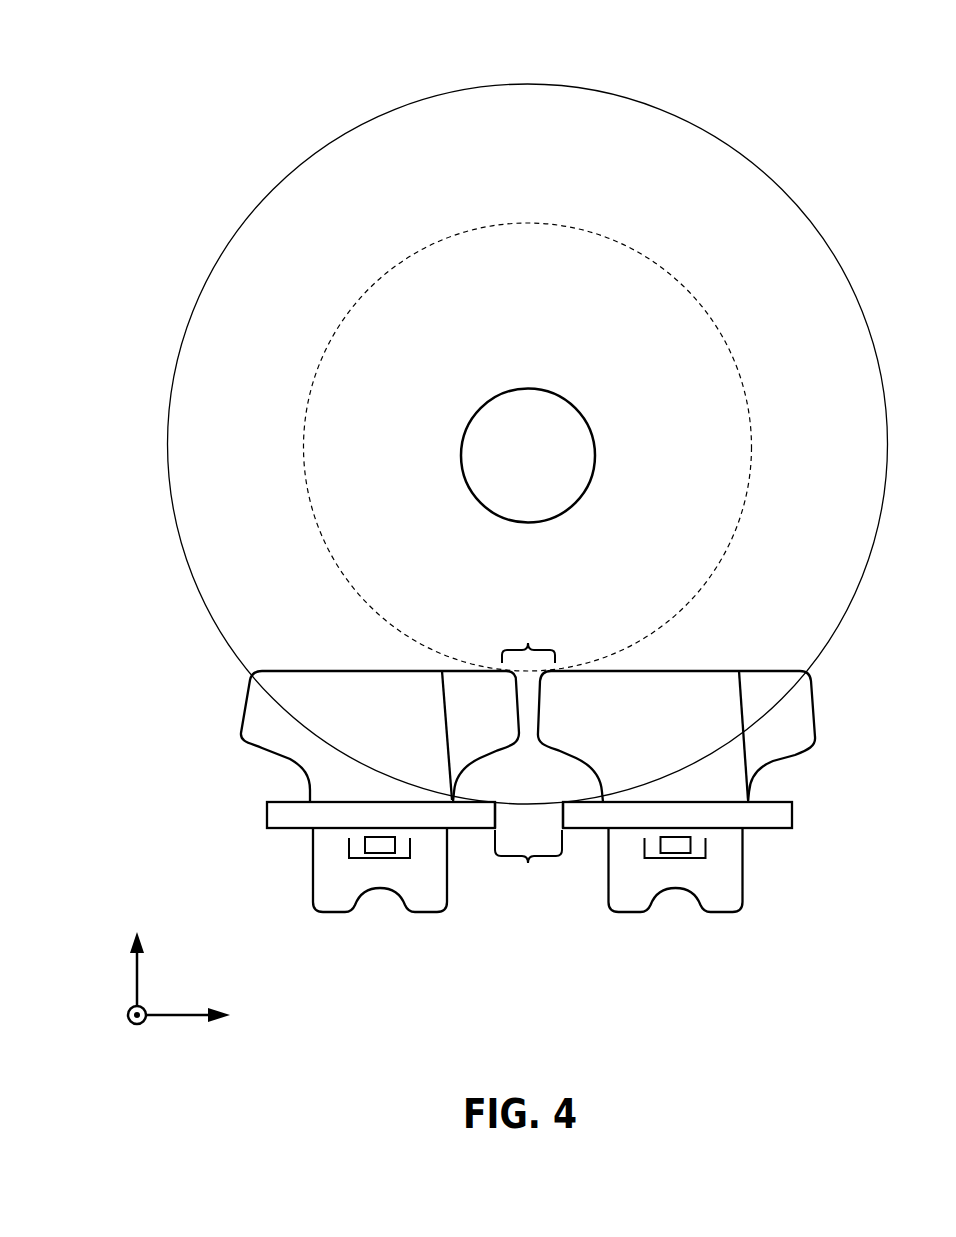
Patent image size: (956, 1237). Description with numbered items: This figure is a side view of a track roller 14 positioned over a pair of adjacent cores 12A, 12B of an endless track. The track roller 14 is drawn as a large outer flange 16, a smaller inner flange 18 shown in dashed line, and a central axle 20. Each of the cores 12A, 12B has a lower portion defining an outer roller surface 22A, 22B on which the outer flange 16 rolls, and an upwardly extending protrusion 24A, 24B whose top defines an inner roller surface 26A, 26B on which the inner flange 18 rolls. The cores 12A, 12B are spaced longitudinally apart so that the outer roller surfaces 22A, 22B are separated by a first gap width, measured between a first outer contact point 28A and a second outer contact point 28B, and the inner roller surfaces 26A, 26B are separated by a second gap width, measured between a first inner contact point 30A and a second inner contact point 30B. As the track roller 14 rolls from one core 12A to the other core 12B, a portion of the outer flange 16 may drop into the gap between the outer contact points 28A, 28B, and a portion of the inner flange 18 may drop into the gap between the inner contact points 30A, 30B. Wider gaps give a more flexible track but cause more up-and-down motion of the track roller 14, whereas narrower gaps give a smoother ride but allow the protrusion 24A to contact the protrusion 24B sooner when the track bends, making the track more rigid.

The track roller 14 is at (796, 33).
The outer flange 16 is at (312, 155).
The inner flange 18 is at (387, 277).
The axle 20 is at (480, 410).
The core 12A is at (338, 719).
The core 12B is at (713, 719).
The outer roller surface 22A is at (397, 800).
The outer roller surface 22B is at (670, 800).
The protrusion 24A is at (257, 705).
The protrusion 24B is at (797, 702).
The inner roller surface 26A is at (350, 668).
The inner roller surface 26B is at (672, 668).
The first outer contact point 28A is at (497, 801).
The second outer contact point 28B is at (561, 803).
The first inner contact point 30A is at (503, 675).
The second inner contact point 30B is at (562, 675).